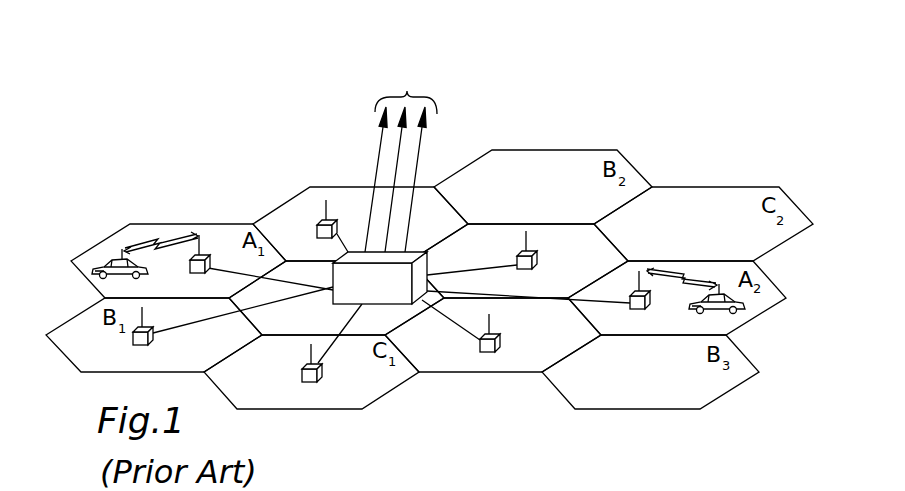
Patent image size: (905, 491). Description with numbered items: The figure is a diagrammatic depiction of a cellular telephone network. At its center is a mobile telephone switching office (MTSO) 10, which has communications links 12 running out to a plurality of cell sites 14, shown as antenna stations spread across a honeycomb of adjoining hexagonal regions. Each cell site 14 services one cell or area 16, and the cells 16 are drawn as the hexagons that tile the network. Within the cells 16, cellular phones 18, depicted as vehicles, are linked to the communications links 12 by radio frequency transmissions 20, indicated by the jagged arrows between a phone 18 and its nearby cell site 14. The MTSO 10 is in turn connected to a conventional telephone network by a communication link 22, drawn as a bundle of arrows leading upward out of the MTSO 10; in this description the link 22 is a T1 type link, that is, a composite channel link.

The mobile telephone switching office (MTSO) 10 is at (405, 305).
The communications link 12 is at (463, 267).
The cell site 14 is at (320, 220).
The cell 16 is at (173, 283).
The cellular phone 18 is at (100, 262).
The radio frequency transmission 20 is at (156, 237).
The communication link 22 is at (407, 95).